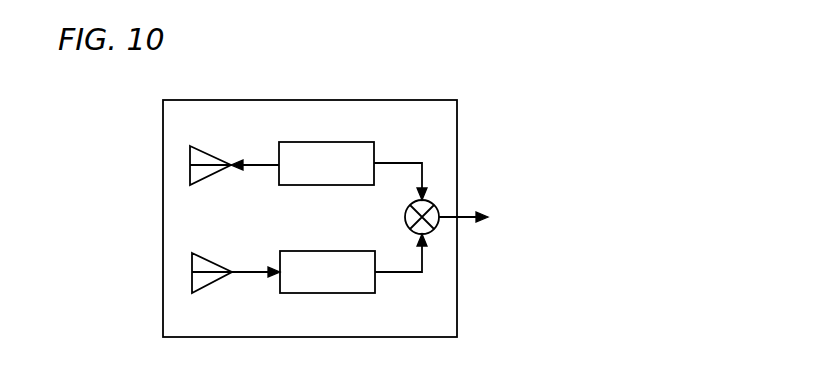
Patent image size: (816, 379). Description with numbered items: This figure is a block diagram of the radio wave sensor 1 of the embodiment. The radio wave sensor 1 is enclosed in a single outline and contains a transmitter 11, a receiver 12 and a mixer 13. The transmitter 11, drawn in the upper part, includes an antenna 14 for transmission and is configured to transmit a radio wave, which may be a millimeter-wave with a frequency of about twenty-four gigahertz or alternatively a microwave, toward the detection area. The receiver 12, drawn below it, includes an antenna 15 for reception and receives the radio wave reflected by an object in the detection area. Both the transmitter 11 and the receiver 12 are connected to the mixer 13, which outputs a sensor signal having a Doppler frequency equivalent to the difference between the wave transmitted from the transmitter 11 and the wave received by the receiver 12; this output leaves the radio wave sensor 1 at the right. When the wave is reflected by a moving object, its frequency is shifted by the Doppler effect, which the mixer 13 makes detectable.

The radio wave sensor 1 is at (403, 97).
The transmitter 11 is at (329, 171).
The receiver 12 is at (329, 263).
The mixer 13 is at (405, 217).
The antenna for transmission 14 is at (205, 158).
The antenna for reception 15 is at (212, 268).